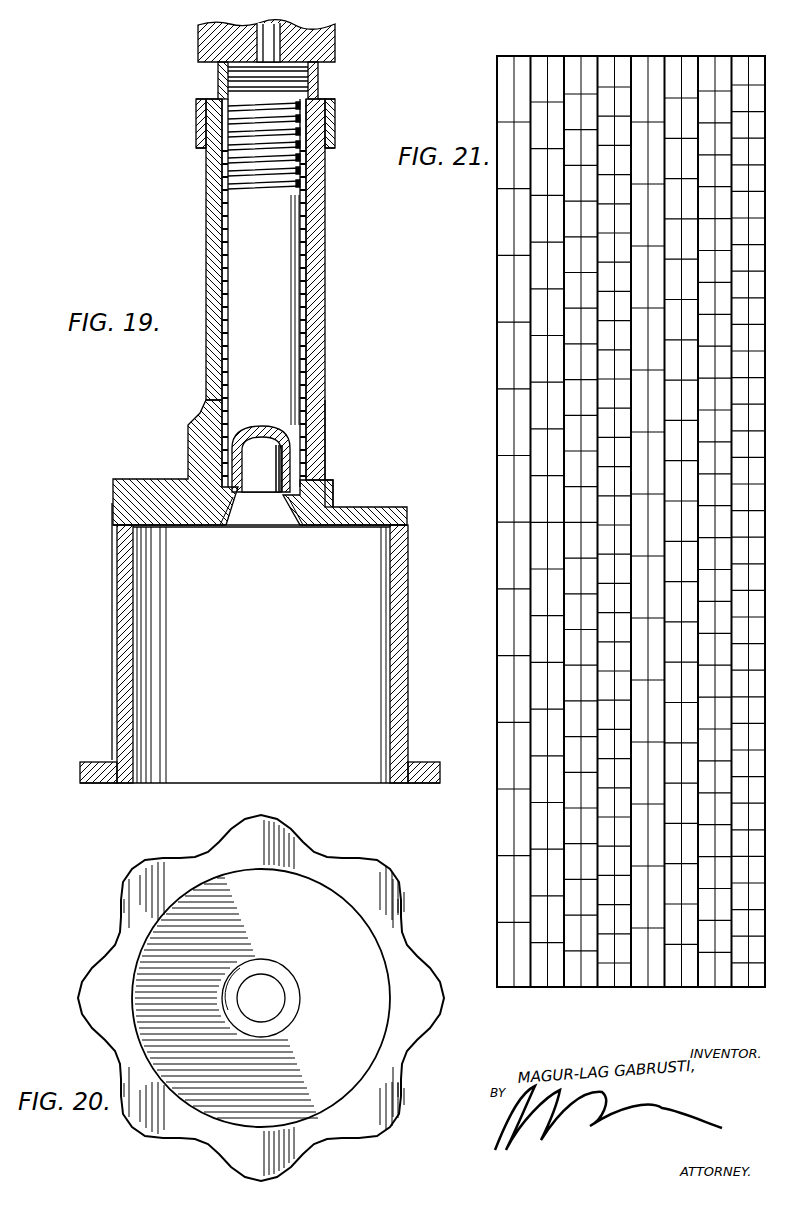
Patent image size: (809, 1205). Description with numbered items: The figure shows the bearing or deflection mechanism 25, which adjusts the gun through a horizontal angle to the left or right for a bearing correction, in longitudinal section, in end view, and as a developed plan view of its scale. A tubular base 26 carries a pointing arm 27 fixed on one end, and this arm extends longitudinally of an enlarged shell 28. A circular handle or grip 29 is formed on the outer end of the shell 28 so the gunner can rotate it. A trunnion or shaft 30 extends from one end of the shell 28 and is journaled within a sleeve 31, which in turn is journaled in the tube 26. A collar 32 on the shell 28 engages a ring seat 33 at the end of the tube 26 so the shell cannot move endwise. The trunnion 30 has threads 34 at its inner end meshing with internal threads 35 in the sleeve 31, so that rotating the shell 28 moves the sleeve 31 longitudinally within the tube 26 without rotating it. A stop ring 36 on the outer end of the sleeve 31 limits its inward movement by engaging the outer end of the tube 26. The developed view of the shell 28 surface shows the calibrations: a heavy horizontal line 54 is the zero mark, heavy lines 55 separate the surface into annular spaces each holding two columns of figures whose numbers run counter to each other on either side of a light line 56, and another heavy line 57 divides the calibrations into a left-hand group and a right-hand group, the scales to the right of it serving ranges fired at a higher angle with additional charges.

In FIG. 19, the bearing or deflection mechanism 25 is at (336, 471).
In FIG. 19, the tubular base 26 is at (327, 327).
In FIG. 19, the pointing arm 27 is at (113, 652).
In FIG. 19, the enlarged shell 28 is at (395, 611).
In FIG. 20, the enlarged shell 28 is at (375, 950).
In FIG. 19, the circular handle or grip 29 is at (413, 764).
In FIG. 20, the circular handle or grip 29 is at (395, 933).
In FIG. 19, the trunnion or shaft 30 is at (237, 473).
In FIG. 19, the sleeve 31 is at (312, 238).
In FIG. 19, the collar 32 is at (327, 491).
In FIG. 19, the ring seat 33 is at (333, 503).
In FIG. 19, the threads 34 is at (303, 152).
In FIG. 21, the threads 34 is at (497, 990).
In FIG. 19, the internal threads 35 is at (299, 259).
In FIG. 19, the stop ring 36 is at (318, 46).
In FIG. 21, the heavy horizontal line 54 is at (748, 58).
In FIG. 21, the heavy lines 55 is at (566, 60).
In FIG. 21, the light line 56 is at (514, 60).
In FIG. 21, the heavy line 57 is at (631, 58).